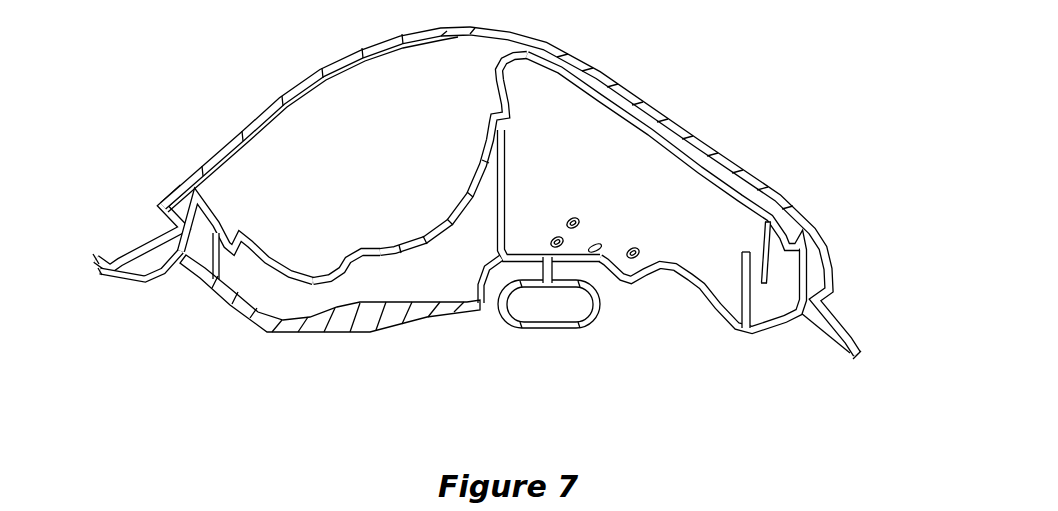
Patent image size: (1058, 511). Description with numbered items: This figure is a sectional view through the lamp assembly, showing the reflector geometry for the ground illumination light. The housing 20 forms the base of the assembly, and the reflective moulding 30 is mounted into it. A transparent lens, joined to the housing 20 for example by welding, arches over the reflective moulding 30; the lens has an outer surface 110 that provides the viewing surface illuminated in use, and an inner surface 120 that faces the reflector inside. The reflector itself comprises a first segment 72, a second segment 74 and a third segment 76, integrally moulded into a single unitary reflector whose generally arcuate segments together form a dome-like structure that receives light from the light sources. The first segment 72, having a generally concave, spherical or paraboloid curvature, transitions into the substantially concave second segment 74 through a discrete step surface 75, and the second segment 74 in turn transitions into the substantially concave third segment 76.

The housing 20 is at (283, 330).
The reflective moulding 30 is at (193, 200).
The first segment 72 is at (260, 240).
The second segment 74 is at (420, 252).
The step surface 75 is at (348, 252).
The third segment 76 is at (478, 170).
The outer surface 110 is at (622, 80).
The inner surface 120 is at (703, 138).